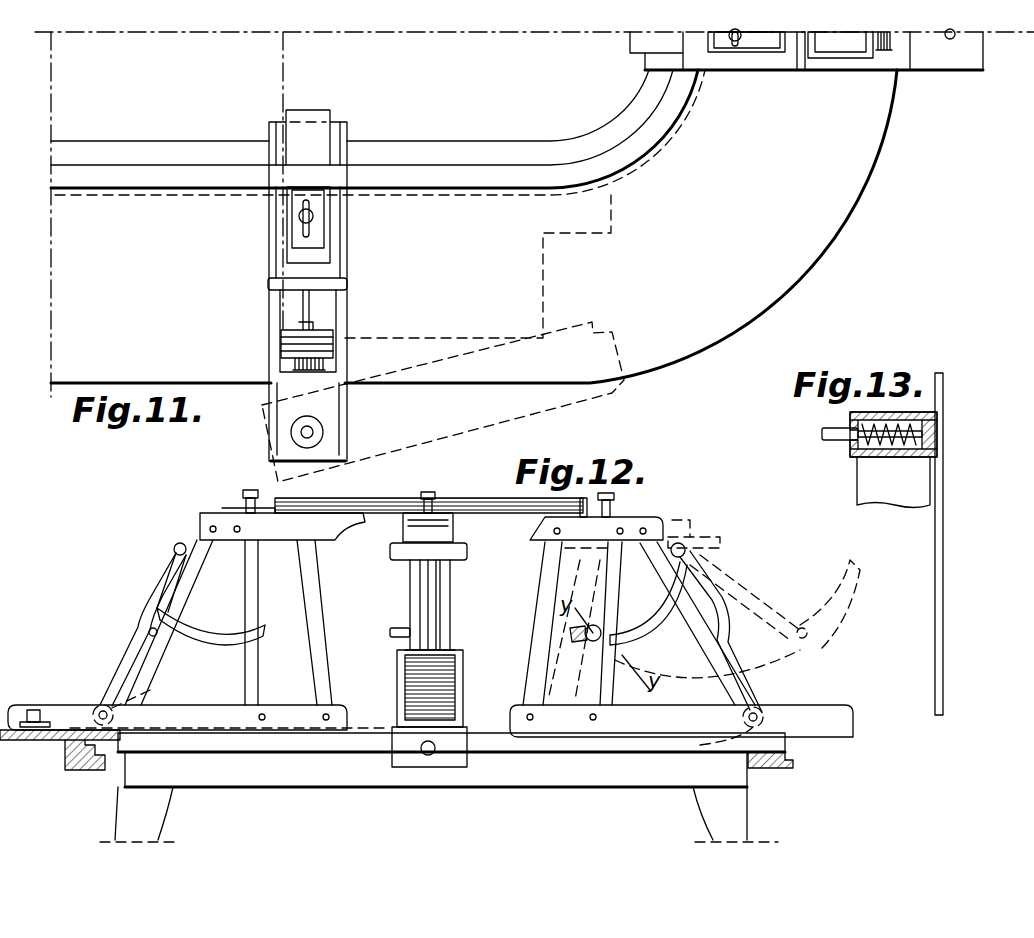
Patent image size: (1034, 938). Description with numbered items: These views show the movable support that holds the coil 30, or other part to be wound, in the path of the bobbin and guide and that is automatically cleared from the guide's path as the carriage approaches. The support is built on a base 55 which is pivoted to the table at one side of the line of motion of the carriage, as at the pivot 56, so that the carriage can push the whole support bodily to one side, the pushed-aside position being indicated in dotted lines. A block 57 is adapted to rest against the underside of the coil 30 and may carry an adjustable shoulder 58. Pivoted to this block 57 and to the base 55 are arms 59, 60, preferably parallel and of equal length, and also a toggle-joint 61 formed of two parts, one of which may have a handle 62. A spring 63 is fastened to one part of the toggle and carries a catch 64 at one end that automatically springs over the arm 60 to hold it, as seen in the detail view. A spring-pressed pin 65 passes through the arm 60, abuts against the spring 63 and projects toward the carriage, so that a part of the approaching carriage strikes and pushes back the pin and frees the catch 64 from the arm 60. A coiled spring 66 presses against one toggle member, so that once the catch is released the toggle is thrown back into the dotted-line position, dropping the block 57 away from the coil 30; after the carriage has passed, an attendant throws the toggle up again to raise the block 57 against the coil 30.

In FIG. 11, the coil 30 is at (374, 129).
In FIG. 12, the coil 30 is at (375, 498).
In FIG. 11, the base 55 is at (330, 268).
In FIG. 12, the base 55 is at (82, 705).
In FIG. 11, the pivot 56 is at (313, 432).
In FIG. 12, the pivot 56 is at (33, 710).
In FIG. 11, the block 57 is at (310, 248).
In FIG. 12, the block 57 is at (312, 522).
In FIG. 11, the adjustable shoulder 58 is at (314, 214).
In FIG. 12, the adjustable shoulder 58 is at (248, 490).
In FIG. 12, the arm 59 is at (316, 605).
In FIG. 12, the arm 60 is at (288, 583).
In FIG. 13, the arm 60 is at (937, 427).
In FIG. 11, the toggle-joint 61 is at (333, 343).
In FIG. 12, the toggle-joint 61 is at (143, 615).
In FIG. 11, the handle 62 is at (268, 284).
In FIG. 12, the handle 62 is at (174, 549).
In FIG. 12, the spring 63 is at (205, 628).
In FIG. 13, the spring 63 is at (943, 532).
In FIG. 12, the catch 64 is at (280, 598).
In FIG. 13, the catch 64 is at (925, 413).
In FIG. 12, the spring-pressed pin 65 is at (250, 640).
In FIG. 13, the spring-pressed pin 65 is at (842, 442).
In FIG. 11, the coiled spring 66 is at (295, 365).
In FIG. 12, the coiled spring 66 is at (115, 708).